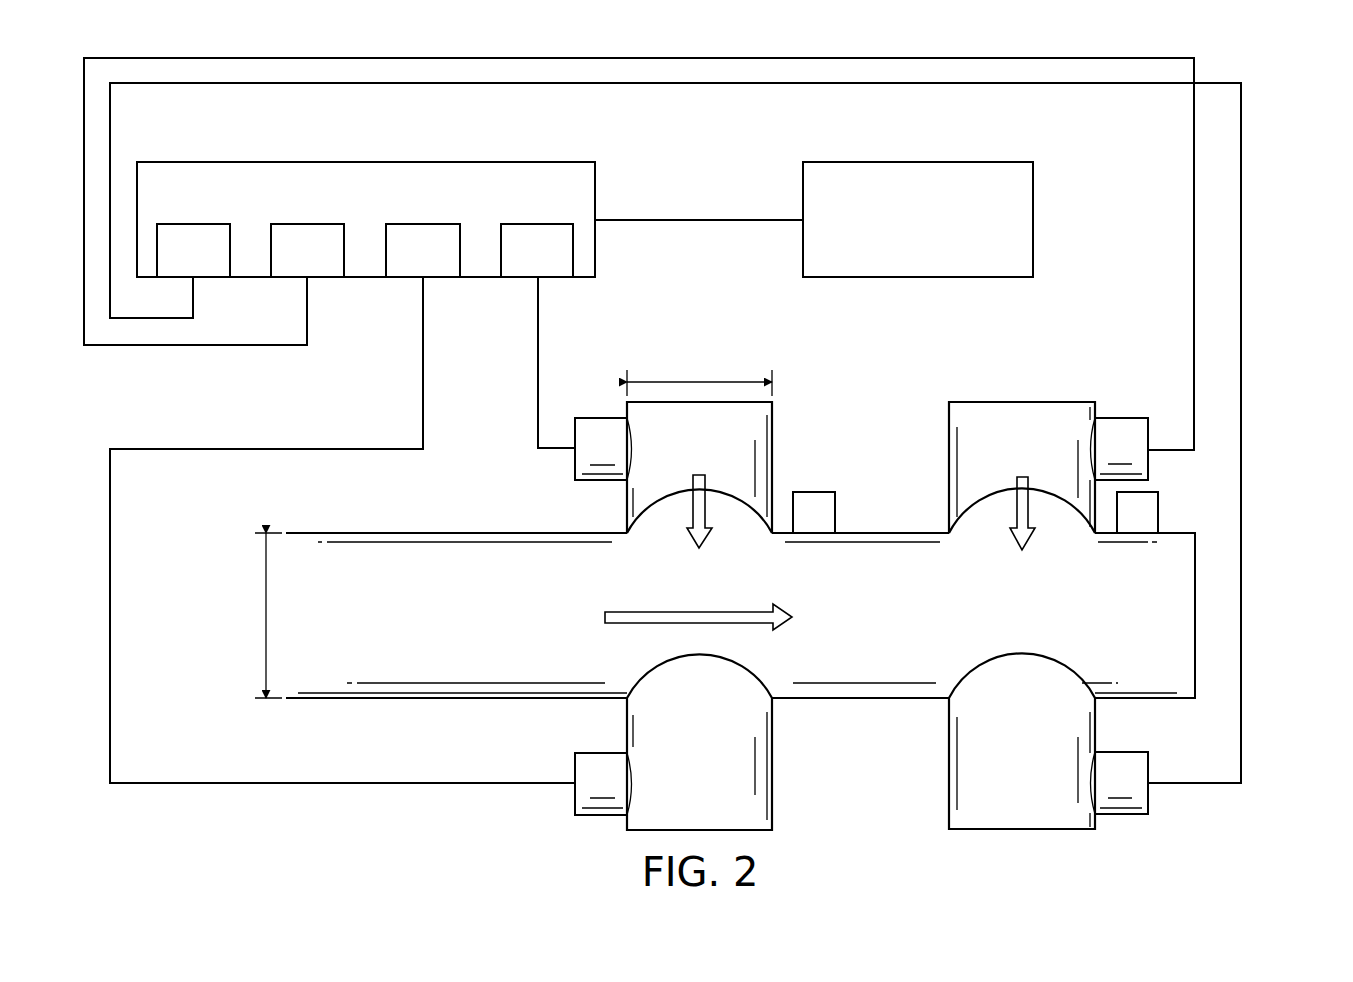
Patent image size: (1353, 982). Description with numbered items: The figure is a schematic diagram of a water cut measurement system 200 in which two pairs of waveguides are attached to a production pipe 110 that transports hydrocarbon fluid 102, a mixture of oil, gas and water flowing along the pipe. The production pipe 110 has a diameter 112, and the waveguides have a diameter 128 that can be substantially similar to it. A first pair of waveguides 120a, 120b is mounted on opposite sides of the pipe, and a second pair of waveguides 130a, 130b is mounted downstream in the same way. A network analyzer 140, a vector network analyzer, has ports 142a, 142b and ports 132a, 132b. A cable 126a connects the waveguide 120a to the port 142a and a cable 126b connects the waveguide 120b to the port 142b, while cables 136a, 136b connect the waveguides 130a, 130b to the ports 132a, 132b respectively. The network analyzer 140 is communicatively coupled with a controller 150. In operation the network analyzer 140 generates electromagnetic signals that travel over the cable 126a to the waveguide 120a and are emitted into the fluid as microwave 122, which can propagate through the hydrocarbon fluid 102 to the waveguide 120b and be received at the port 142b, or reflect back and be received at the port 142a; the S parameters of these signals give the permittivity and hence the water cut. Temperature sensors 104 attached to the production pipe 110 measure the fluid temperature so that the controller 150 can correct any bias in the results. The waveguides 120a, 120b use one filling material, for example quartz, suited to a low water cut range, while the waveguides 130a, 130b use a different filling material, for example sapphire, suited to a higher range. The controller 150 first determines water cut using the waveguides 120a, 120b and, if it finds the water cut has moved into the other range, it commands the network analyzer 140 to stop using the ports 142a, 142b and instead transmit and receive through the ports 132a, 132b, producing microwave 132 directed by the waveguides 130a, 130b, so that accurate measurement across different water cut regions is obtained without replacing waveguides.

The water cut measurement system 200 is at (412, 836).
The network analyzer 140 is at (320, 160).
The controller 150 is at (942, 158).
The port 132a is at (335, 264).
The port 132b is at (221, 264).
The port 142a is at (509, 264).
The port 142b is at (395, 264).
The cable 136a is at (1193, 262).
The cable 136b is at (1241, 283).
The cable 126a is at (538, 347).
The cable 126b is at (423, 346).
The production pipe 110 is at (375, 704).
The diameter 112 is at (264, 617).
The hydrocarbon fluid 102 is at (760, 603).
The temperature sensor 104 is at (835, 510).
The waveguide 120a is at (775, 428).
The waveguide 120b is at (775, 793).
The microwave 122 is at (705, 490).
The diameter 128 is at (700, 382).
The waveguide 130a is at (1050, 400).
The waveguide 130b is at (1050, 833).
The microwave 132 is at (1030, 490).